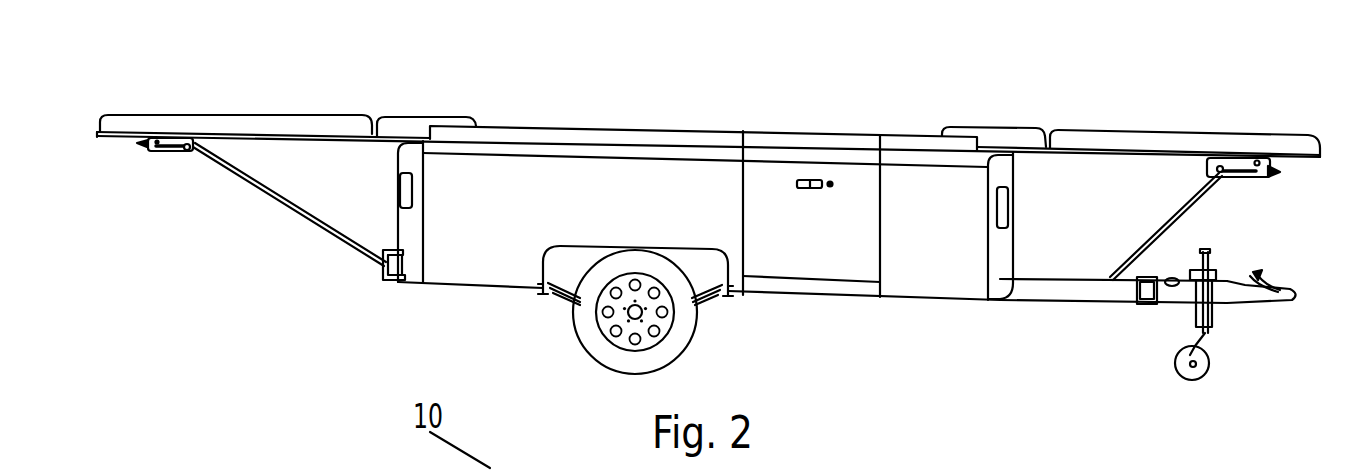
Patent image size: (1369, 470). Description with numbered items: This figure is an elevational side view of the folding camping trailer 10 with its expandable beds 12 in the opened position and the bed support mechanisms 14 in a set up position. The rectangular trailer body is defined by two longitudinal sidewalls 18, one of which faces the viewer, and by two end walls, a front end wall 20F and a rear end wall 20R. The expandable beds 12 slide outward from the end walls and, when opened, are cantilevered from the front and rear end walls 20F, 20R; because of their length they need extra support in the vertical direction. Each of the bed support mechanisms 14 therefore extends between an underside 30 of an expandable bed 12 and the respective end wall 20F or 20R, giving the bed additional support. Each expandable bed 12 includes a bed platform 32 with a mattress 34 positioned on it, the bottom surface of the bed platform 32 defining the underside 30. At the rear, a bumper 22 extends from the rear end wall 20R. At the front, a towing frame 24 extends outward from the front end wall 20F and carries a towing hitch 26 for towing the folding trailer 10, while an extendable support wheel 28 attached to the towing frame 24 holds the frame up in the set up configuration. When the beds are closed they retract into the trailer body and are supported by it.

The folding camping trailer 10 is at (447, 90).
The expandable beds 12 is at (84, 121).
The bed support mechanisms 14 is at (168, 153).
The longitudinal sidewalls 18 is at (645, 213).
The rear end wall 20R is at (396, 213).
The front end wall 20F is at (1018, 240).
The bumper 22 is at (398, 281).
The towing frame 24 is at (1073, 287).
The towing hitch 26 is at (1322, 318).
The extendable support wheel 28 is at (1223, 317).
The underside 30 is at (255, 141).
The bed platform 32 is at (107, 139).
The mattress 34 is at (391, 116).